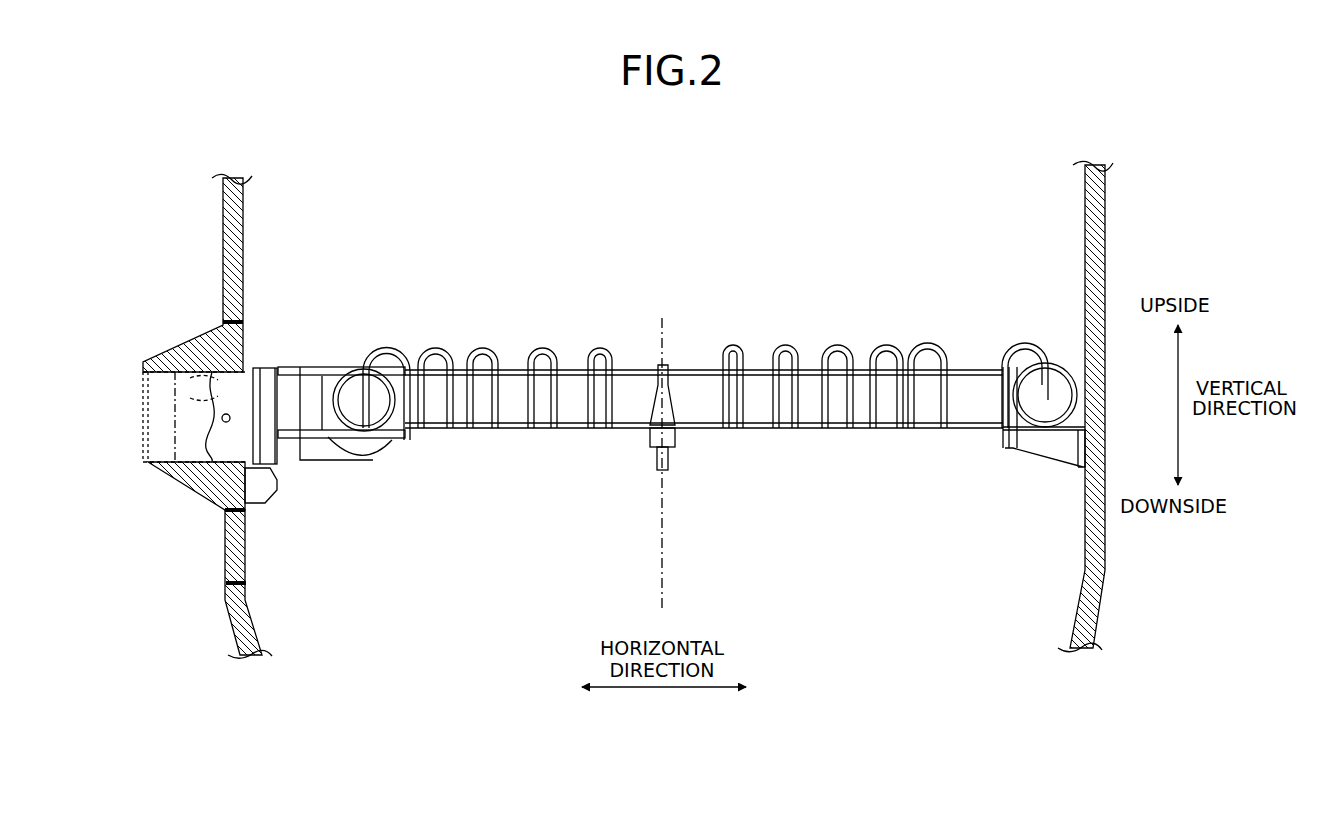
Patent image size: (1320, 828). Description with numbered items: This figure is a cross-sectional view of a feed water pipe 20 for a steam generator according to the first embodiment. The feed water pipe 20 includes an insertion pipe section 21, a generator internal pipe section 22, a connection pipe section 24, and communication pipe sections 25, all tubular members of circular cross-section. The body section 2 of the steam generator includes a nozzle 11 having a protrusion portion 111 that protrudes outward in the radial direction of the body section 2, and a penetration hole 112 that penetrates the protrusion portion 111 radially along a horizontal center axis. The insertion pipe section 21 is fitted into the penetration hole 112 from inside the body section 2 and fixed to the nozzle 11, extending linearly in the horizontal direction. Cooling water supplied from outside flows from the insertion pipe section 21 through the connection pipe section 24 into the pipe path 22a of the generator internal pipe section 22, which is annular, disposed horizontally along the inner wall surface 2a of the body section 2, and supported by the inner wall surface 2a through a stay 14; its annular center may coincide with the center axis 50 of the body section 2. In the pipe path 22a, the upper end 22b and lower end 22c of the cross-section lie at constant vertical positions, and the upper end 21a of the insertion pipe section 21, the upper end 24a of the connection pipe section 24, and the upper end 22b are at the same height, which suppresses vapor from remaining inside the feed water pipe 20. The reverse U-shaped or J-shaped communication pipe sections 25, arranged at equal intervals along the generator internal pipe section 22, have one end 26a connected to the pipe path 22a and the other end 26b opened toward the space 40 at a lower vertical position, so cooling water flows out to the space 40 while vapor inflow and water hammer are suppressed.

The body section 2 is at (208, 232).
The inner wall surface 2a is at (243, 248).
The nozzle 11 is at (152, 336).
The protrusion portion 111 is at (190, 340).
The penetration hole 112 is at (215, 380).
The upper end of the inner wall surface of the insertion pipe section 21a is at (215, 400).
The insertion pipe section 21 is at (246, 365).
The connection pipe section 24 is at (328, 470).
The upper end of the pipe path of the connection pipe section 24a is at (310, 385).
The generator internal pipe section 22 is at (468, 280).
The pipe path 22a is at (512, 390).
The upper end 22b is at (352, 388).
The lower end 22c is at (376, 442).
The communication pipe section 25 is at (387, 348).
The one end of the communication path 26a is at (420, 345).
The other end of the communication path 26b is at (443, 428).
The stay 14 is at (656, 449).
The center axis 50 is at (661, 451).
The space 40 is at (597, 258).
The feed water pipe 20 is at (819, 236).